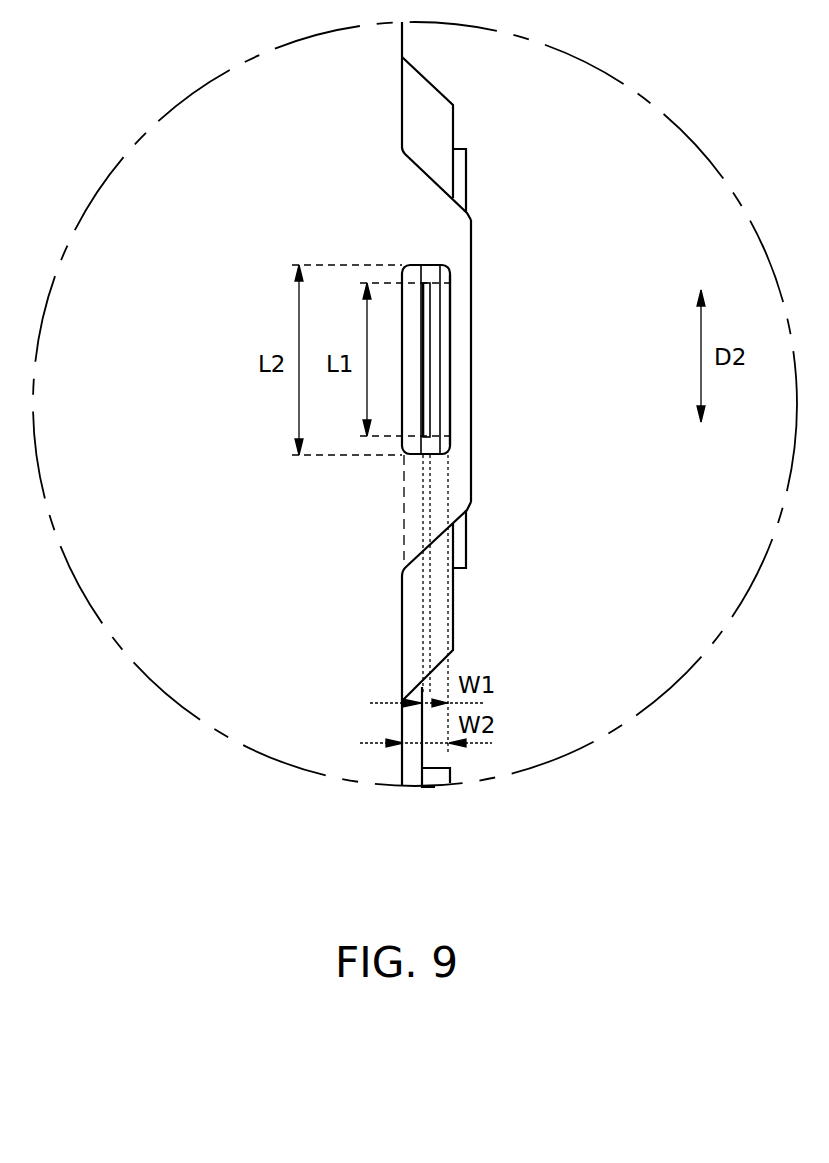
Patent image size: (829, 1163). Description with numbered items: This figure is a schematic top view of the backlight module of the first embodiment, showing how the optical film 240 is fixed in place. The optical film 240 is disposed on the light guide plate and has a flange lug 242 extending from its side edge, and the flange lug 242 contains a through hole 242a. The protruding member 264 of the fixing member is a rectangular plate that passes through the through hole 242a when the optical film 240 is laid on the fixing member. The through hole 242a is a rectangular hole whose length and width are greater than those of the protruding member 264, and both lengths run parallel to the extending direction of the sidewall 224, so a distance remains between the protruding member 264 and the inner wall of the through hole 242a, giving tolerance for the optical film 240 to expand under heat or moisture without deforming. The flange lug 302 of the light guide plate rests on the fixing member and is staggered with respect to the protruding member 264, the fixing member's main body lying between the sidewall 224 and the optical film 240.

The flange lug 302 is at (433, 118).
The optical film 240 is at (489, 365).
The sidewall 224 is at (455, 532).
The flange lug 242 is at (460, 329).
The through hole 242a is at (448, 312).
The protruding member 264 is at (430, 400).